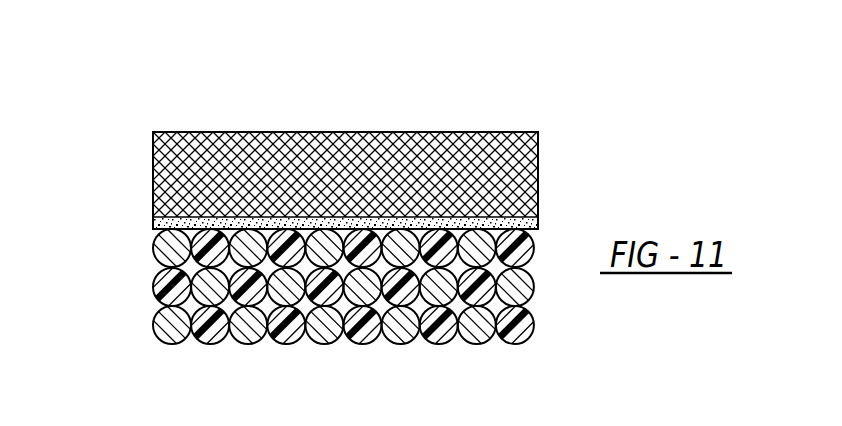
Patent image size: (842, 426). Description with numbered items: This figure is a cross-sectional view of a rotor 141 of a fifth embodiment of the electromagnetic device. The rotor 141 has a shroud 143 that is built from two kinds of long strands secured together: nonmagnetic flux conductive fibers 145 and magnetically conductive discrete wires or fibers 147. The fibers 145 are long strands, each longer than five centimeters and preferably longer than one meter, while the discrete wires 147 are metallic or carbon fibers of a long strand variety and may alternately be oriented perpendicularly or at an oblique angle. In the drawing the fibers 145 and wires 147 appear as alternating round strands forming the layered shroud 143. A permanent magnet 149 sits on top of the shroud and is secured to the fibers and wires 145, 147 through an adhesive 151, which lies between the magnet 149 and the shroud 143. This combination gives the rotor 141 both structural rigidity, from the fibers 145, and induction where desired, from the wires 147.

The rotor 141 is at (137, 95).
The shroud 143 is at (116, 255).
The nonmagnetic flux conductive fibers 145 is at (166, 290).
The magnetically conductive discrete wires 147 is at (173, 323).
The permanent magnet 149 is at (337, 167).
The adhesive 151 is at (497, 222).